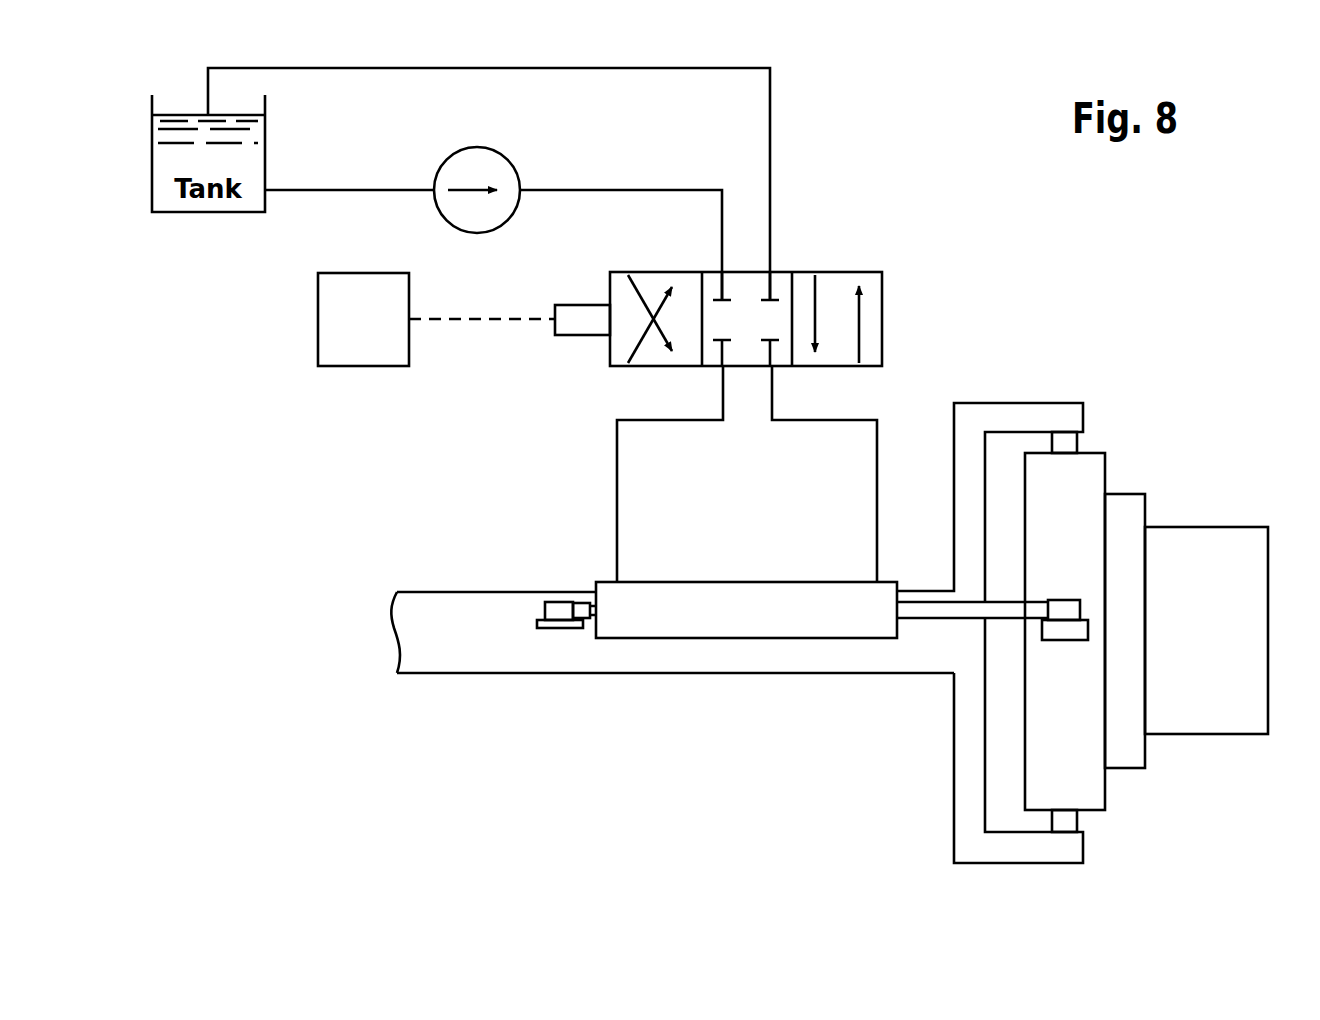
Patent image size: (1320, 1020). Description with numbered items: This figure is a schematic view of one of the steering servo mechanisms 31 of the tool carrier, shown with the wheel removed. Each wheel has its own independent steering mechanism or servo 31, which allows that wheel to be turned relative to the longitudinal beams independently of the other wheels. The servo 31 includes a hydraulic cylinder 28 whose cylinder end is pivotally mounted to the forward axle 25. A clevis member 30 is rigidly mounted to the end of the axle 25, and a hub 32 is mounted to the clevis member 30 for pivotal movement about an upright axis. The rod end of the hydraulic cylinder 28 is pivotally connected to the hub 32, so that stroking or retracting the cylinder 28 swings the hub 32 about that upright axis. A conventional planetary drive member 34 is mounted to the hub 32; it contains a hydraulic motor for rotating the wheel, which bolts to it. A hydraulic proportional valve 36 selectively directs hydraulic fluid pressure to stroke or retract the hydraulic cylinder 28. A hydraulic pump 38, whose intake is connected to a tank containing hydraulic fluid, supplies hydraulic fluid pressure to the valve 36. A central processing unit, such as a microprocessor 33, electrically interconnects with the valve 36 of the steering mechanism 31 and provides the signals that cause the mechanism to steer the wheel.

The forward axle 25 is at (556, 648).
The hydraulic cylinder 28 is at (787, 622).
The clevis member 30 is at (1028, 403).
The steering servo 31 is at (908, 732).
The hub 32 is at (1107, 787).
The microprocessor 33 is at (318, 305).
The planetary drive member 34 is at (1205, 527).
The hydraulic proportional valve 36 is at (870, 272).
The hydraulic pump 38 is at (510, 157).